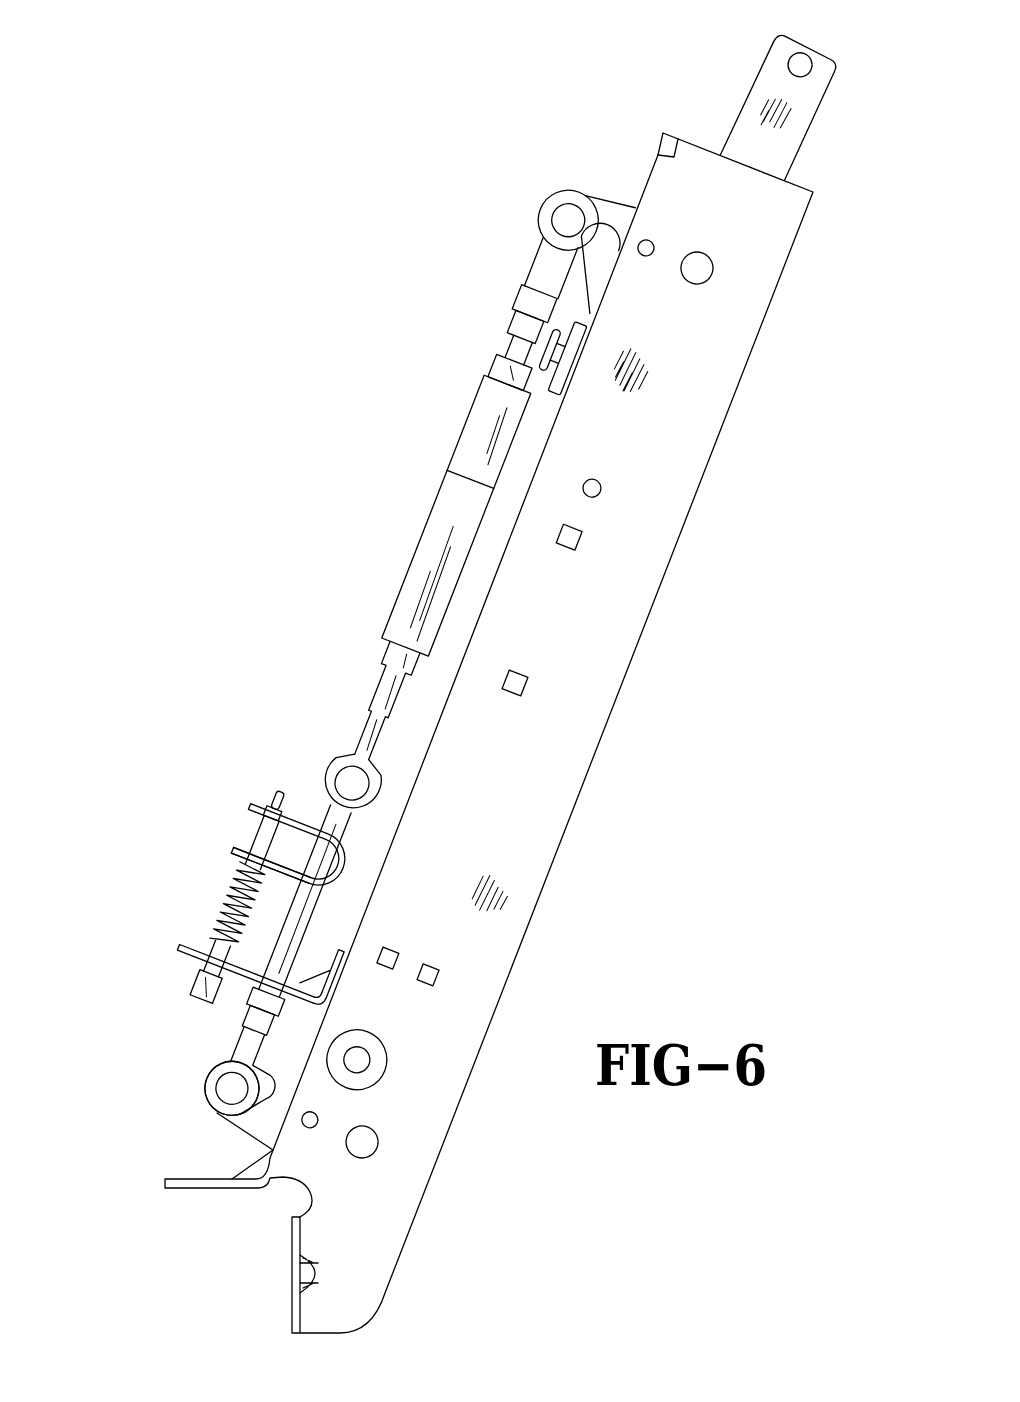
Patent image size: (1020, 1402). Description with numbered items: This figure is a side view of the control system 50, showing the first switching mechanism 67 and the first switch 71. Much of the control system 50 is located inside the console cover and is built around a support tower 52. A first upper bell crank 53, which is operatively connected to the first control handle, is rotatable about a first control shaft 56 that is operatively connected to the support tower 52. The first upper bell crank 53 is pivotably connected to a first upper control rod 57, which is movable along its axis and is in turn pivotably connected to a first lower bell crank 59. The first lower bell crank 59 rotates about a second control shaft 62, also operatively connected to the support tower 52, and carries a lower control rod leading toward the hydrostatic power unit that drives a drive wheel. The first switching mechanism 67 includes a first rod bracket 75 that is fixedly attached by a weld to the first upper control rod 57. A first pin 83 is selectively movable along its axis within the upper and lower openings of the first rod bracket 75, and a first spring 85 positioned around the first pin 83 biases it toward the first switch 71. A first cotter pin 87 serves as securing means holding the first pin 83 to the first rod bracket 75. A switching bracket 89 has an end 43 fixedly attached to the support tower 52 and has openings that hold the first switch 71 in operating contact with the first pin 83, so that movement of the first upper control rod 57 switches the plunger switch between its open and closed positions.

The end 43 is at (346, 956).
The control system 50 is at (358, 272).
The support tower 52 is at (740, 346).
The first upper bell crank 53 is at (788, 40).
The first control shaft 56 is at (703, 265).
The first upper control rod 57 is at (305, 915).
The first lower bell crank 59 is at (243, 1116).
The second control shaft 62 is at (364, 1144).
The first switching mechanism 67 is at (150, 778).
The first switch 71 is at (192, 990).
The first rod bracket 75 is at (234, 855).
The first pin 83 is at (283, 797).
The first spring 85 is at (233, 906).
The first cotter pin 87 is at (264, 805).
The switching bracket 89 is at (181, 946).